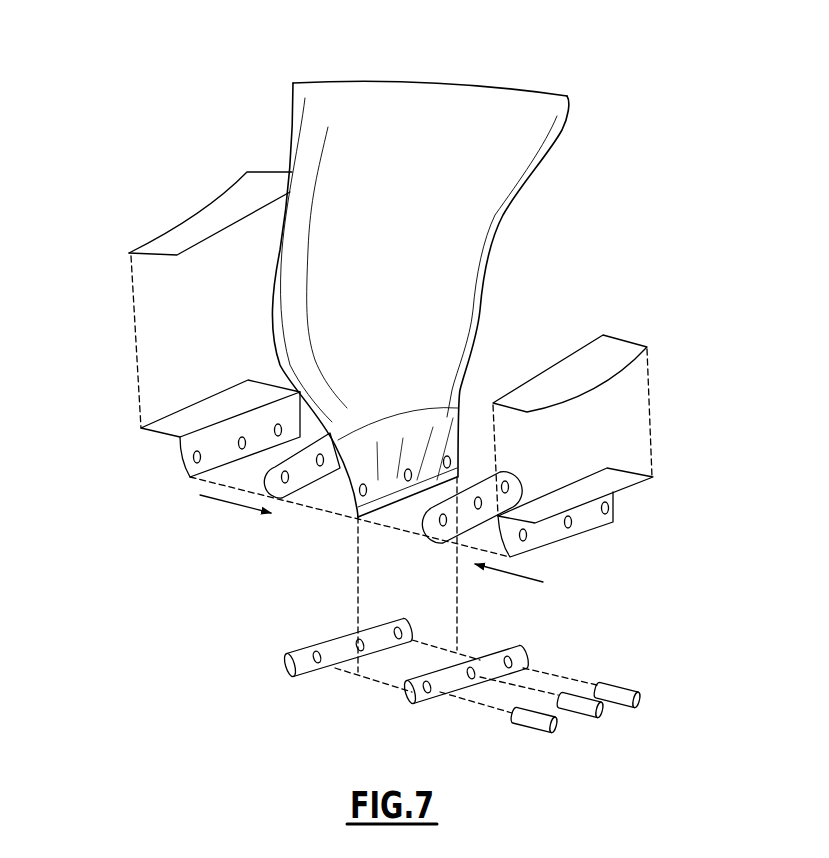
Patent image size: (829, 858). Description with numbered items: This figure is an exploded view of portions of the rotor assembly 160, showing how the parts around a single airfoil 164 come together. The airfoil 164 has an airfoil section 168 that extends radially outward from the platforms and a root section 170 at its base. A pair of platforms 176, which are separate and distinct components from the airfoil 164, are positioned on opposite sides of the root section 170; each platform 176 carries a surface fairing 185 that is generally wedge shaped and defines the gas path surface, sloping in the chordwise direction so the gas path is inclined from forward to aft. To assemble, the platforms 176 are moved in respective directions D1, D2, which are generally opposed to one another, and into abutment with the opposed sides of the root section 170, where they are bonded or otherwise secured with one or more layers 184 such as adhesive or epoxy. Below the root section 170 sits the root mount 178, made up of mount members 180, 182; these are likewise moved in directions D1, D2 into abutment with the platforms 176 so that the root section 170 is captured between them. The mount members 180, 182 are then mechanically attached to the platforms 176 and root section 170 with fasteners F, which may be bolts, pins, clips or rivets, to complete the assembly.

The rotor assembly 160 is at (115, 107).
The airfoil 164 is at (315, 77).
The airfoil section 168 is at (477, 272).
The root section 170 is at (458, 443).
The platform 176 is at (164, 410).
The root mount 178 is at (290, 640).
The mount member 180 is at (287, 667).
The mount member 182 is at (410, 694).
The layer 184 is at (305, 482).
The surface fairing 185 is at (203, 212).
The direction D1 is at (222, 505).
The direction D2 is at (509, 578).
The fastener F is at (583, 710).